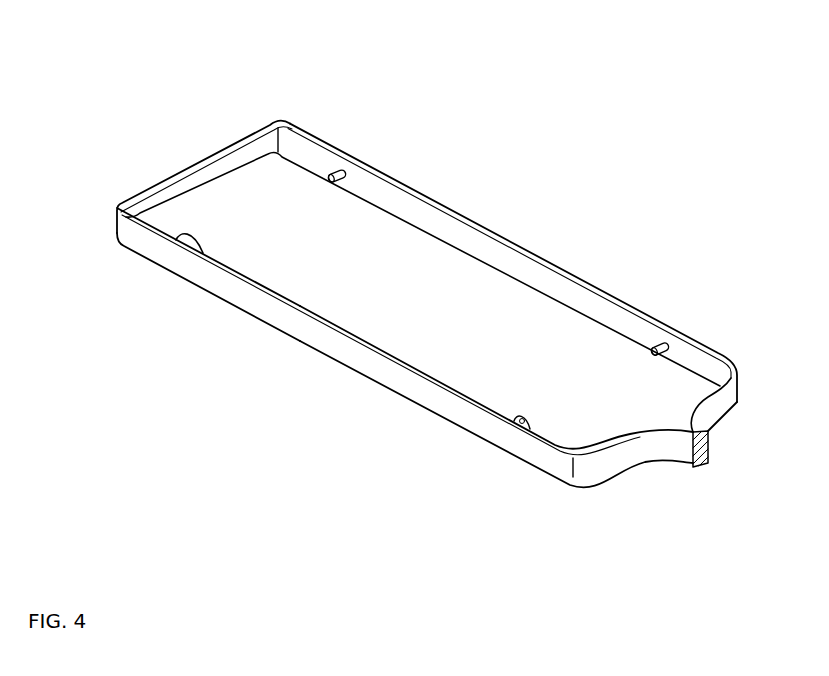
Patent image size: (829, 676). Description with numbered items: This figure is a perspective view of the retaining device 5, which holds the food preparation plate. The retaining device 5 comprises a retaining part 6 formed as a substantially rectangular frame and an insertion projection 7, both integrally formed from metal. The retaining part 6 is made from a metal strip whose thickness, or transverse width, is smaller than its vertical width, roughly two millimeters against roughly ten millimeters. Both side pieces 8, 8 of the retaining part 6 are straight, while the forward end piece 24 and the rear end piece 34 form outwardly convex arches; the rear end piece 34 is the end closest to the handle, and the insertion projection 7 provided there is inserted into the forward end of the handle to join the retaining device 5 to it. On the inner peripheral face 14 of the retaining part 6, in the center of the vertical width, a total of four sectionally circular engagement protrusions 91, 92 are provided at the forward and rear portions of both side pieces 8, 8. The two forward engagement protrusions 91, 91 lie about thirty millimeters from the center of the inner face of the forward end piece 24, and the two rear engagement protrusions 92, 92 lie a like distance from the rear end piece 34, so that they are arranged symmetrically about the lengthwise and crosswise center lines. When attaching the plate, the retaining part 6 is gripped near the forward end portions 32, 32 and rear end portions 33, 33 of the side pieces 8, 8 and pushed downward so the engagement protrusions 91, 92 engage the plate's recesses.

The retaining device 5 is at (460, 211).
The retaining part 6 is at (565, 272).
The insertion projection 7 is at (687, 462).
The side piece 8 is at (507, 240).
The inner peripheral face 14 is at (398, 200).
The forward end piece 24 is at (153, 180).
The forward end portion 32 is at (318, 140).
The rear end portion 33 is at (730, 358).
The rear end piece 34 is at (712, 407).
The forward engagement protrusion 91 is at (333, 172).
The rear engagement protrusion 92 is at (663, 340).